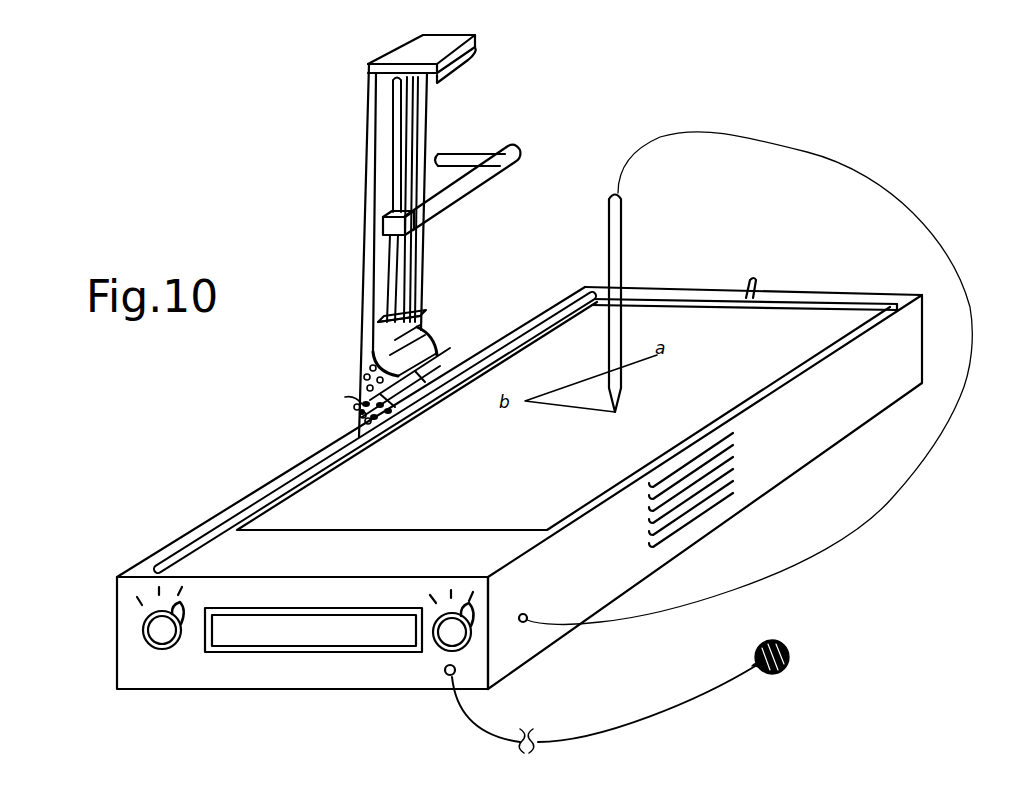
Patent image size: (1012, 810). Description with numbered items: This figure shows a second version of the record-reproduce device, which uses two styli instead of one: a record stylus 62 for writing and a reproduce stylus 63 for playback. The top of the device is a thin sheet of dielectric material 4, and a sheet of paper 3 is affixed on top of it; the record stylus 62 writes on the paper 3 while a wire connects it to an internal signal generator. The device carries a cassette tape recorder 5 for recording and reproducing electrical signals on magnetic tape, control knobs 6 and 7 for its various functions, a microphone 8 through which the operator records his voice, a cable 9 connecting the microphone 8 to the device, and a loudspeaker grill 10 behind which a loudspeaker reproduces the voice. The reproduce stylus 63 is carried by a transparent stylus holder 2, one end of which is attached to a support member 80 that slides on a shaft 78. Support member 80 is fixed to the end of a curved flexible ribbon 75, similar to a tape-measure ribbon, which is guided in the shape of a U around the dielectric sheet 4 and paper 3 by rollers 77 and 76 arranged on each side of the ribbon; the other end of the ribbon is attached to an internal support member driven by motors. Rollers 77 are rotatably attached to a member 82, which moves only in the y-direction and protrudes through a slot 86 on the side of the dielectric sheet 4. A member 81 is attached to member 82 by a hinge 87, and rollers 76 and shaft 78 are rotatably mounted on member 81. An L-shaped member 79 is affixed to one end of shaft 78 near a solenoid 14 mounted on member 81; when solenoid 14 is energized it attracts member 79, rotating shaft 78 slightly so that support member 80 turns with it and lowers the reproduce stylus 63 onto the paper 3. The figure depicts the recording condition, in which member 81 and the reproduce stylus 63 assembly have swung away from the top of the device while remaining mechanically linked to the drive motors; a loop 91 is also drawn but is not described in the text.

The stylus holder 2 is at (463, 200).
The paper 3 is at (470, 523).
The dielectric sheet 4 is at (363, 543).
The cassette tape recorder 5 is at (300, 635).
The control knob 6 is at (163, 637).
The control knob 7 is at (447, 630).
The microphone 8 is at (787, 642).
The cable 9 is at (670, 722).
The loudspeaker grill 10 is at (710, 480).
The solenoid 14 is at (398, 80).
The record stylus 62 is at (622, 220).
The reproduce stylus 63 is at (452, 153).
The curved flexible ribbon 75 is at (388, 270).
The rollers 76 is at (430, 332).
The rollers 77 is at (362, 420).
The shaft 78 is at (397, 145).
The L-shaped member 79 is at (463, 65).
The support member 80 is at (385, 225).
The member 81 is at (403, 43).
The member 82 is at (420, 385).
The slot 86 is at (205, 528).
The hinge 87 is at (356, 410).
The pen cord 91 is at (950, 425).